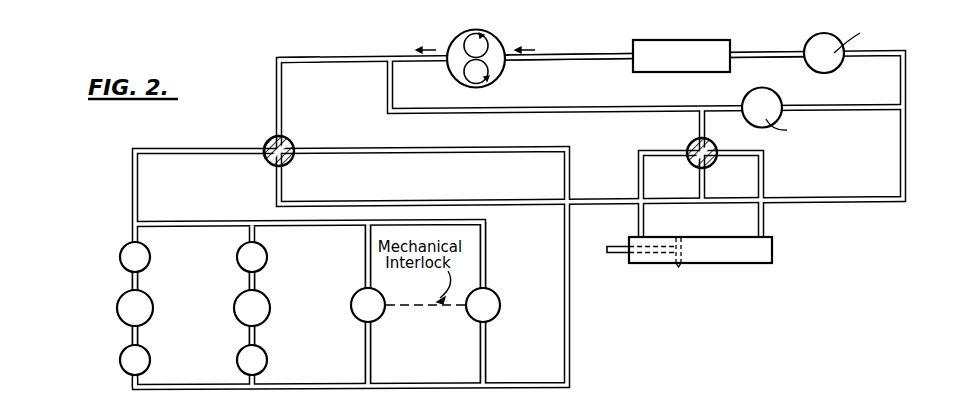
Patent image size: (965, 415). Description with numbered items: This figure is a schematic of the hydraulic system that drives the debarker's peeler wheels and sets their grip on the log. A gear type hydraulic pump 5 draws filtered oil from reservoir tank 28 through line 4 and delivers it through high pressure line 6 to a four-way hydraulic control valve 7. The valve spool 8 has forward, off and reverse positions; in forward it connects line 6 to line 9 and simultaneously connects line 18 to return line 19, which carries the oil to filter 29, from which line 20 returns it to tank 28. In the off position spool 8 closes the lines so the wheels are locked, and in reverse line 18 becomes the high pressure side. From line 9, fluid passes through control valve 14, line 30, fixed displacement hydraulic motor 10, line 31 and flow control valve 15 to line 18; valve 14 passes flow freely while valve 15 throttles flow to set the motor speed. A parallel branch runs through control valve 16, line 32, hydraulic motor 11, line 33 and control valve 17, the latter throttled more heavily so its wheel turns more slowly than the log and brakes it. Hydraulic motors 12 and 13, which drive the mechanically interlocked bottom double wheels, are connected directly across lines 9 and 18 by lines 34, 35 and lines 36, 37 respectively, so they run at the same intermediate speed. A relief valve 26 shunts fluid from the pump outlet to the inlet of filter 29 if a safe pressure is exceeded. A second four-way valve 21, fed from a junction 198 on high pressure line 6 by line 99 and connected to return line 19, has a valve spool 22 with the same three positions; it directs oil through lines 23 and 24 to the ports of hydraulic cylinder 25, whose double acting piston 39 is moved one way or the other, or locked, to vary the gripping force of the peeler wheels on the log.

The line 4 is at (555, 55).
The gear type hydraulic pump 5 is at (492, 55).
The high pressure line 6 is at (277, 113).
The four-way hydraulic control valve 7 is at (291, 140).
The valve spool 8 is at (266, 158).
The line 9 is at (232, 150).
The fixed displacement hydraulic motor 10 is at (126, 312).
The hydraulic motor 11 is at (246, 306).
The hydraulic motor 12 is at (358, 312).
The hydraulic motor 13 is at (495, 307).
The control valve 14 is at (127, 264).
The flow control valve 15 is at (141, 366).
The control valve 16 is at (256, 258).
The control valve 17 is at (262, 364).
The line 18 is at (346, 158).
The return line 19 is at (905, 88).
The line 20 is at (768, 53).
The four-way valve 21 is at (711, 152).
The valve spool 22 is at (692, 165).
The line 23 is at (639, 217).
The line 24 is at (762, 226).
The hydraulic cylinder 25 is at (774, 247).
The relief valve 26 is at (767, 107).
The reservoir tank 28 is at (673, 70).
The filter 29 is at (832, 62).
The line 30 is at (141, 284).
The line 31 is at (141, 337).
The line 32 is at (258, 284).
The line 33 is at (258, 337).
The line 34 is at (371, 275).
The line 35 is at (371, 345).
The line 36 is at (486, 278).
The line 37 is at (486, 348).
The double acting piston 39 is at (678, 274).
The line 99 is at (699, 127).
The bypass conduit 198 is at (388, 66).